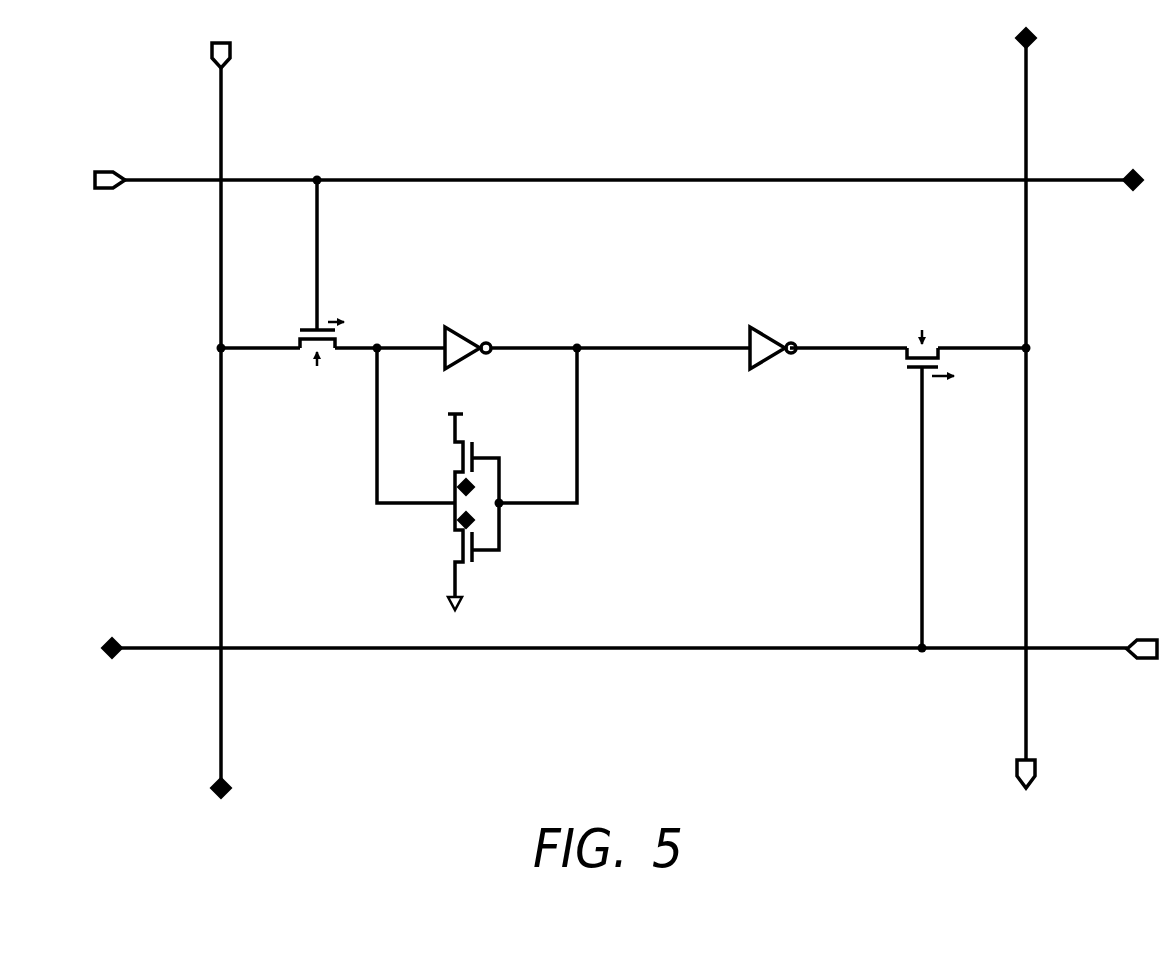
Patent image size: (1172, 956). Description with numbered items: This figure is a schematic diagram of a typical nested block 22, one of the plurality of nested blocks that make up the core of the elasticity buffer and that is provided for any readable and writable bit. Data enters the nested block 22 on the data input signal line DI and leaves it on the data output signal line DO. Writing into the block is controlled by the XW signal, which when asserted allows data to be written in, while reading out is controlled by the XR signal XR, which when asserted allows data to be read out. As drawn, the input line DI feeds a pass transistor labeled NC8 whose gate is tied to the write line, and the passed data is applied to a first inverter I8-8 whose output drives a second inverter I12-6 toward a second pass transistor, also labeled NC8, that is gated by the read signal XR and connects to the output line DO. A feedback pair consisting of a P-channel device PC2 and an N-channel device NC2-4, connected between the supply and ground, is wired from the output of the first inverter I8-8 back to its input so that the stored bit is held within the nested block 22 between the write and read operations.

The nested block 22 is at (727, 168).
The data input signal line DI is at (235, 418).
The data output signal line DO is at (1042, 408).
The XR read signal XR is at (630, 635).
The N-channel pass transistor NC8 is at (295, 273).
The inverter I8-8 is at (460, 319).
The inverter I12-6 is at (764, 319).
The P-channel feedback transistor PC2 is at (464, 458).
The N-channel feedback transistor NC2-4 is at (460, 550).